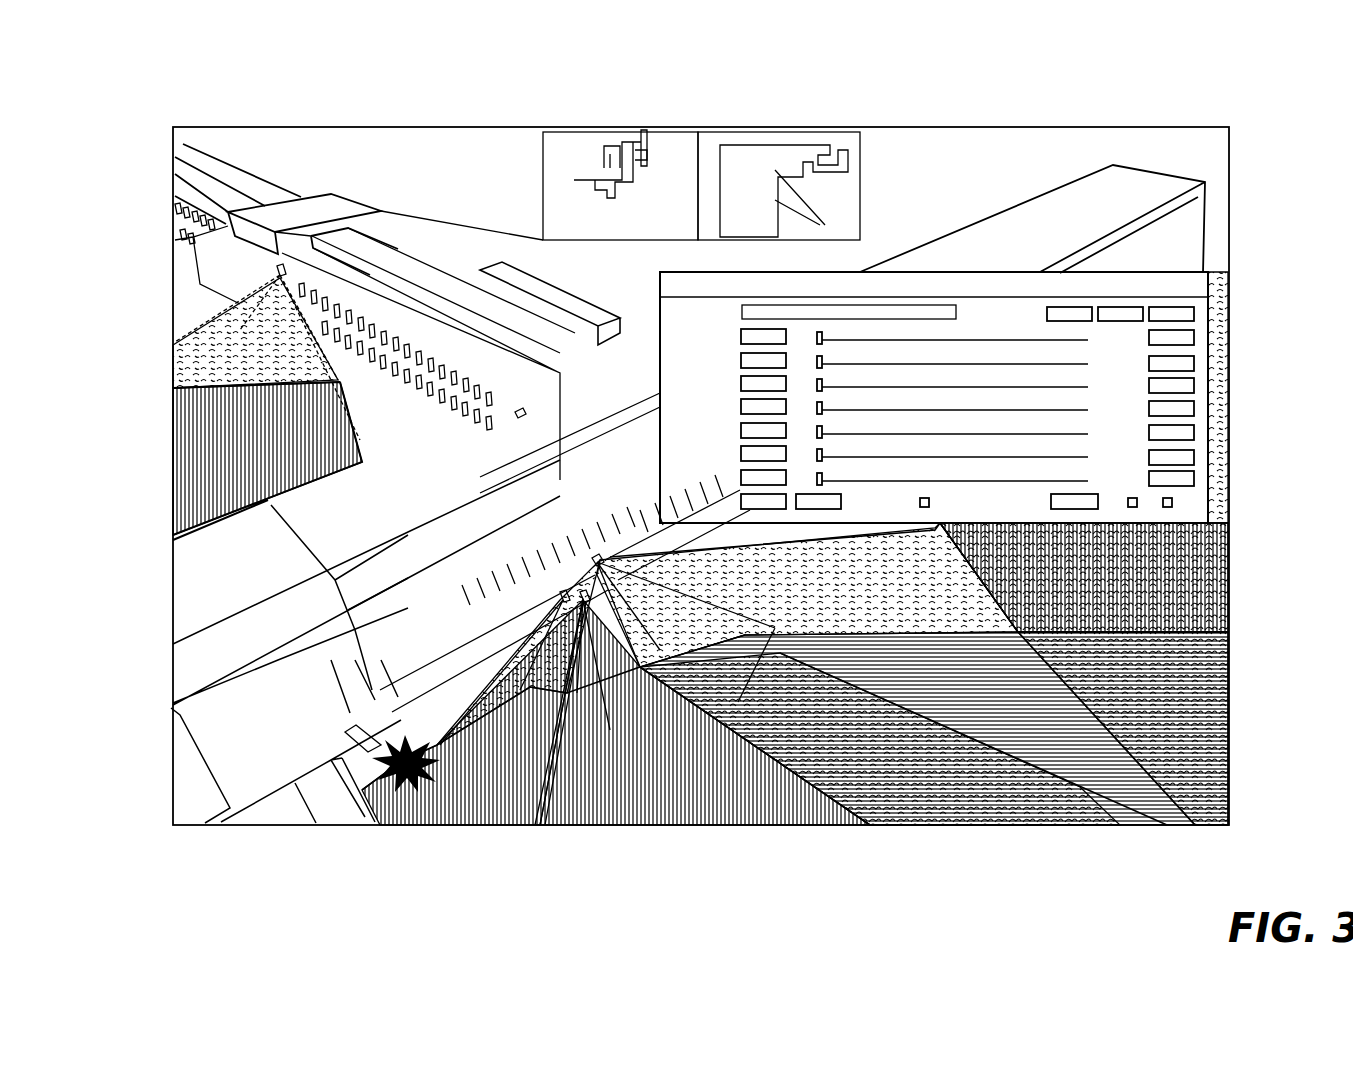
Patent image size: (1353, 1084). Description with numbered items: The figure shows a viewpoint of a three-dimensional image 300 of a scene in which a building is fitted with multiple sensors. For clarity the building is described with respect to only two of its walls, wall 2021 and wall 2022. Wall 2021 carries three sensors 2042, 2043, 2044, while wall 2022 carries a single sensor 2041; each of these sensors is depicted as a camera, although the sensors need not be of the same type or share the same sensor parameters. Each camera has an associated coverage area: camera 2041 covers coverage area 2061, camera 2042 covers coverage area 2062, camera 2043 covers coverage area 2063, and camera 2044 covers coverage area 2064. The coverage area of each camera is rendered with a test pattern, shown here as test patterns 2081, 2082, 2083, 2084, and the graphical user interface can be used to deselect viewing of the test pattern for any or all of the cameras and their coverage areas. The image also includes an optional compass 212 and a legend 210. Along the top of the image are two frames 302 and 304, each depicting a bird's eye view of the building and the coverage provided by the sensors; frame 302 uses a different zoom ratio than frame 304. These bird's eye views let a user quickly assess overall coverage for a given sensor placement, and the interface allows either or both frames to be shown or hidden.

The 3D image 300 is at (1205, 141).
The frame 302 is at (578, 132).
The frame 304 is at (848, 134).
The legend 210 is at (1155, 291).
The wall 2021 is at (403, 517).
The wall 2022 is at (490, 352).
The sensor 2041 is at (280, 270).
The sensor 2042 is at (597, 562).
The sensor 2043 is at (585, 596).
The sensor 2044 is at (563, 597).
The coverage area 2061 is at (330, 345).
The coverage area 2062 is at (1133, 548).
The coverage area 2063 is at (660, 800).
The coverage area 2064 is at (401, 703).
The test pattern 2081 is at (345, 385).
The test pattern 2082 is at (1065, 763).
The test pattern 2083 is at (760, 785).
The test pattern 2084 is at (495, 783).
The compass 212 is at (395, 790).